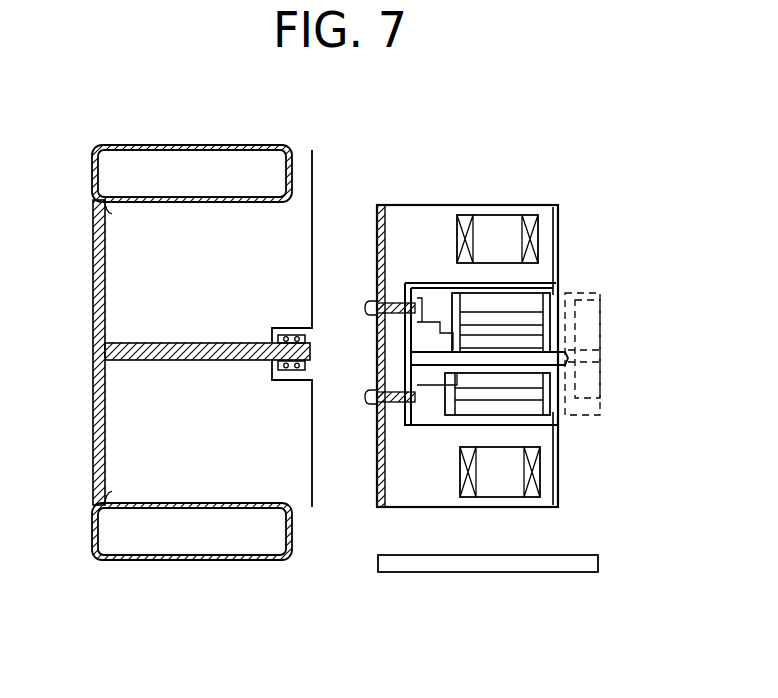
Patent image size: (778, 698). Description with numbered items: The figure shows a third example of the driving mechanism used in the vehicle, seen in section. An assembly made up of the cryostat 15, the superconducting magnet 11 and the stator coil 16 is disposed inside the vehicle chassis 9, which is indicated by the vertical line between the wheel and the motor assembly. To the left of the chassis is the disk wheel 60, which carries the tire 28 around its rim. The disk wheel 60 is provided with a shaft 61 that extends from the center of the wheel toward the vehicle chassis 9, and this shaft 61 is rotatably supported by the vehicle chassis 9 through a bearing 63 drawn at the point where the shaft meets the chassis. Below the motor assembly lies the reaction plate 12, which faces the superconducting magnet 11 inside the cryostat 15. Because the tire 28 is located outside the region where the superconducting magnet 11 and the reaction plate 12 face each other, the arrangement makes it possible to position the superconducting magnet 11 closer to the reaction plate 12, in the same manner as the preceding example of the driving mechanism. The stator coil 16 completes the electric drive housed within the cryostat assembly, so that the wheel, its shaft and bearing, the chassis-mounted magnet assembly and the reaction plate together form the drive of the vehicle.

The vehicle chassis 9 is at (354, 201).
The superconducting magnet 11 is at (540, 236).
The reaction plate 12 is at (553, 572).
The cryostat 15 is at (522, 204).
The stator coil 16 is at (545, 405).
The tire 28 is at (232, 145).
The disk wheel 60 is at (94, 279).
The shaft 61 is at (190, 362).
The bearing 63 is at (290, 372).